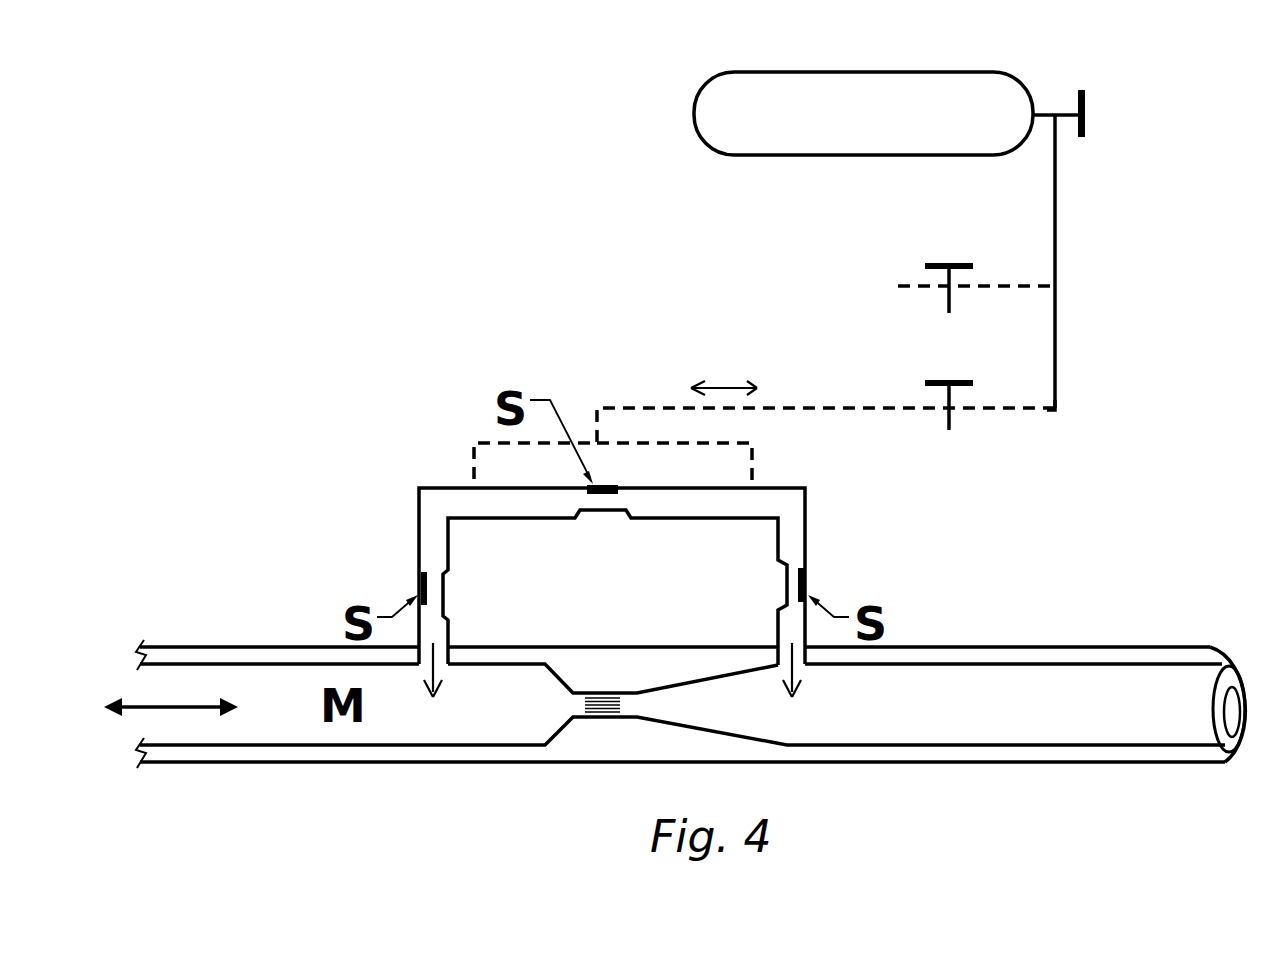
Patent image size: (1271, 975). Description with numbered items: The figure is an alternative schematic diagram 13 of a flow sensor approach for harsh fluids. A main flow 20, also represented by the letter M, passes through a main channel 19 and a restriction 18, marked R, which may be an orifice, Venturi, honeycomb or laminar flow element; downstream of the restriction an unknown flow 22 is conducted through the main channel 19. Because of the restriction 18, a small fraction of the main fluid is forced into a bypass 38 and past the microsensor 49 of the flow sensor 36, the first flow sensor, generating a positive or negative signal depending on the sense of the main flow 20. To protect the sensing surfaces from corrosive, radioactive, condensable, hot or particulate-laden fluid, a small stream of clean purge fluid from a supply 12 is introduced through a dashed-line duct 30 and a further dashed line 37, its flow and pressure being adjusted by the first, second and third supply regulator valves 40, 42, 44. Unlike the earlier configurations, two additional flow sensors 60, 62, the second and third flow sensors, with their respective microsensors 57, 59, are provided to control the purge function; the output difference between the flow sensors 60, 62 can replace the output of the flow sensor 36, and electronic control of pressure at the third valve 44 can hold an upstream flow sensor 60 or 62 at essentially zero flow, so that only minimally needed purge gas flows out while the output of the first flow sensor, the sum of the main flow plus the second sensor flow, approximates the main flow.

The supply 12 is at (865, 72).
The alternative schematic diagram 13 is at (309, 109).
The restriction 18 is at (613, 720).
The main channel 19 is at (396, 748).
The main flow 20 is at (192, 708).
The unknown flow 22 is at (1011, 720).
The duct 30 is at (852, 406).
The flow sensor 36 is at (606, 570).
The supply line to valve V2 37 is at (1020, 285).
The bypass 38 is at (800, 486).
The supply regulator valve 40 is at (1118, 88).
The supply regulator valve 42 is at (878, 212).
The supply regulator valve 44 is at (990, 470).
The microsensor 49 is at (606, 485).
The microsensor 57 is at (418, 580).
The microsensor 59 is at (808, 580).
The flow sensor 60 is at (488, 570).
The flow sensor 62 is at (748, 565).